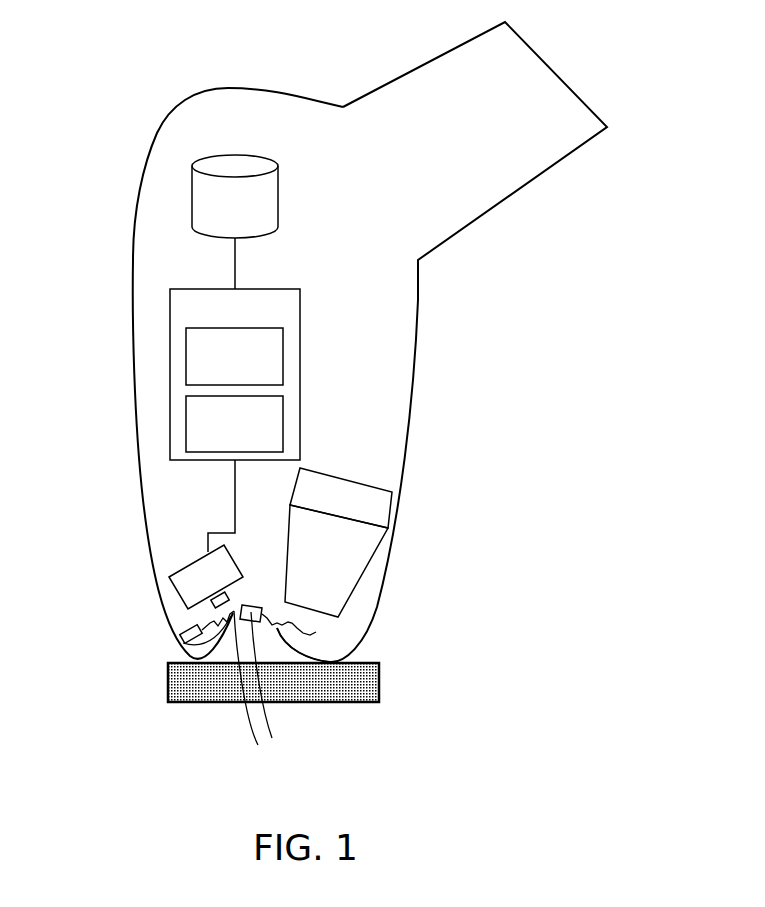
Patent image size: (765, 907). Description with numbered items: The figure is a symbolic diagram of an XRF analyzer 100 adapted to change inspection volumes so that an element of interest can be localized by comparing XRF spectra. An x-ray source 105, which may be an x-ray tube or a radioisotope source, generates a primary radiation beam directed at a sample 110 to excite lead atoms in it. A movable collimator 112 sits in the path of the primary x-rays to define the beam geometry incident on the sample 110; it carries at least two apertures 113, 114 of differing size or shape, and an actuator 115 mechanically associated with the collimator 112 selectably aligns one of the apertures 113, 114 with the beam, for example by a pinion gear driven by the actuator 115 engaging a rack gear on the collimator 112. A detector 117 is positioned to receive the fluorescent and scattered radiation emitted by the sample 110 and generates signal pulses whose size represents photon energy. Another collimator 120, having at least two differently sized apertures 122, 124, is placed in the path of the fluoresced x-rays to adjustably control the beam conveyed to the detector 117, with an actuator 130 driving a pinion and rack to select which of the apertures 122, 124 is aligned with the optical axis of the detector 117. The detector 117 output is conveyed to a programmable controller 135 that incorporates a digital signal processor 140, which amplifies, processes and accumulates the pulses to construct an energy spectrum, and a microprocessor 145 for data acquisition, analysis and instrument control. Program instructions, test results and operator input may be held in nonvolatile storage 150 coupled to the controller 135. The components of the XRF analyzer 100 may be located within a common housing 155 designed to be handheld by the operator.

The XRF analyzer 100 is at (545, 644).
The x-ray source 105 is at (385, 530).
The sample 110 is at (222, 703).
The movable collimator 112 is at (258, 745).
The aperture 113 is at (207, 663).
The aperture 114 is at (190, 642).
The actuator 115 is at (178, 637).
The detector 117 is at (175, 592).
The collimator 120 is at (318, 632).
The aperture 122 is at (292, 634).
The aperture 124 is at (290, 650).
The actuator 130 is at (272, 738).
The programmable controller 135 is at (300, 330).
The digital signal processor 140 is at (185, 425).
The microprocessor 145 is at (185, 357).
The nonvolatile storage 150 is at (280, 198).
The housing 155 is at (415, 385).